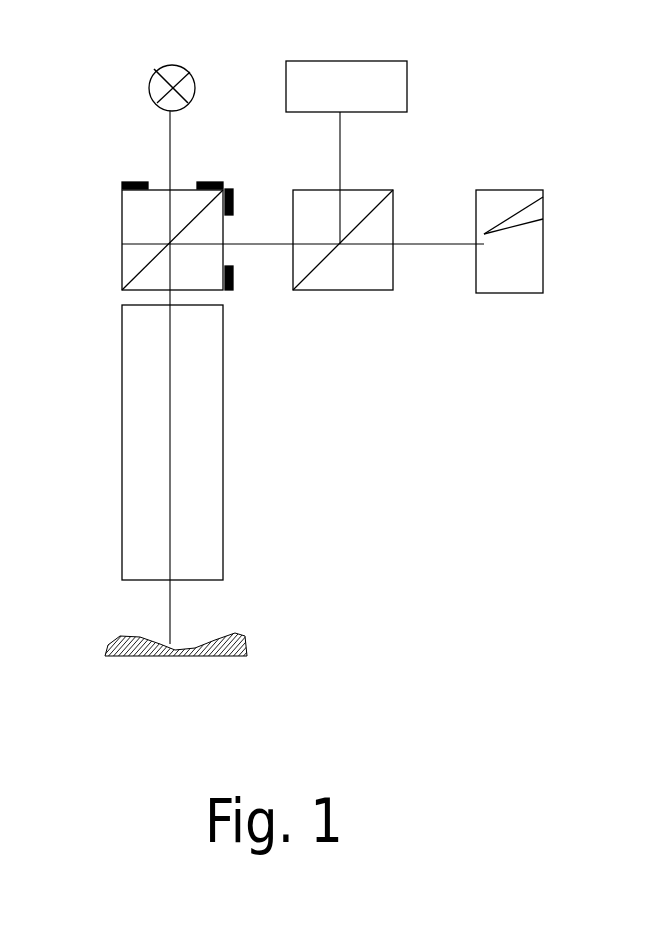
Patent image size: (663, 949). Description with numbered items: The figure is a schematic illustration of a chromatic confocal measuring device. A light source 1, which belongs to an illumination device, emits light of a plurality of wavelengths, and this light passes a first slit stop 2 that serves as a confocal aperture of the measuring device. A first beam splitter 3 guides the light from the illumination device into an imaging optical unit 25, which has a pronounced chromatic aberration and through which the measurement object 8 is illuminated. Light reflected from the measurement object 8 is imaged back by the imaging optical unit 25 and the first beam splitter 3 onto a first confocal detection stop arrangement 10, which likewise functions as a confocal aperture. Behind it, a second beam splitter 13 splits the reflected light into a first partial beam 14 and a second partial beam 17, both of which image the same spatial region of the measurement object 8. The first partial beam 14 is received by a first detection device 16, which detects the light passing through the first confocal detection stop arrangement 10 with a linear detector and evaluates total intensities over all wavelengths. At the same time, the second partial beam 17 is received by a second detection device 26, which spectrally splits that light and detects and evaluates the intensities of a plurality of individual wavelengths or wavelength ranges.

The light source 1 is at (153, 69).
The first slit stop 2 is at (122, 183).
The first beam splitter 3 is at (121, 229).
The measurement object 8 is at (108, 650).
The first confocal detection stop arrangement 10 is at (225, 185).
The second beam splitter 13 is at (358, 292).
The first partial beam 14 is at (340, 140).
The first detection device 16 is at (346, 86).
The second partial beam 17 is at (440, 248).
The imaging optical unit 25 is at (121, 388).
The second detection device 26 is at (509, 241).